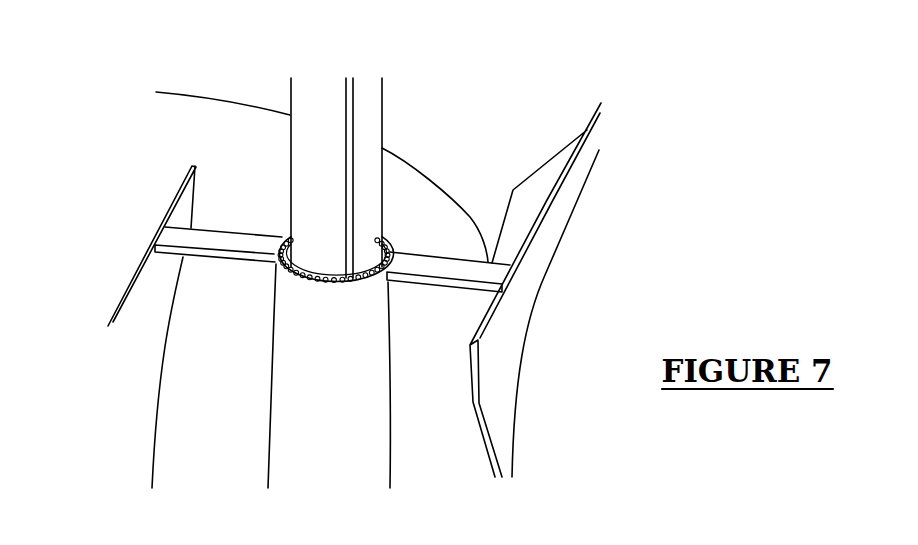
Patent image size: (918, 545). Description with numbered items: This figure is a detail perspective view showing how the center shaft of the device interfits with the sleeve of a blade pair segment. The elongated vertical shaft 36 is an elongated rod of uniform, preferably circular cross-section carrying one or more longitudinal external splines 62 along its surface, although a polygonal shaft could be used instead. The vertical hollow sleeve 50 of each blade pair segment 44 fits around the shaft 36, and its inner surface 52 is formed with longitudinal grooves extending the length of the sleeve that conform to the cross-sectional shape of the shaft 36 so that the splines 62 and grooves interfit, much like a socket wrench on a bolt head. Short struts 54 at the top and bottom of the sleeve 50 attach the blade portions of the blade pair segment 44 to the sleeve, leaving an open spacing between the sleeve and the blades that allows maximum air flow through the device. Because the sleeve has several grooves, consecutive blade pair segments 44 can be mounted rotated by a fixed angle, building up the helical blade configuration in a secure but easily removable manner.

The elongated vertical shaft 36 is at (331, 169).
The blade pair segment 44 is at (137, 268).
The vertical hollow sleeve 50 is at (336, 423).
The inner surface of the sleeve 52 is at (323, 280).
The short struts 54 is at (238, 247).
The external splines 62 is at (353, 108).